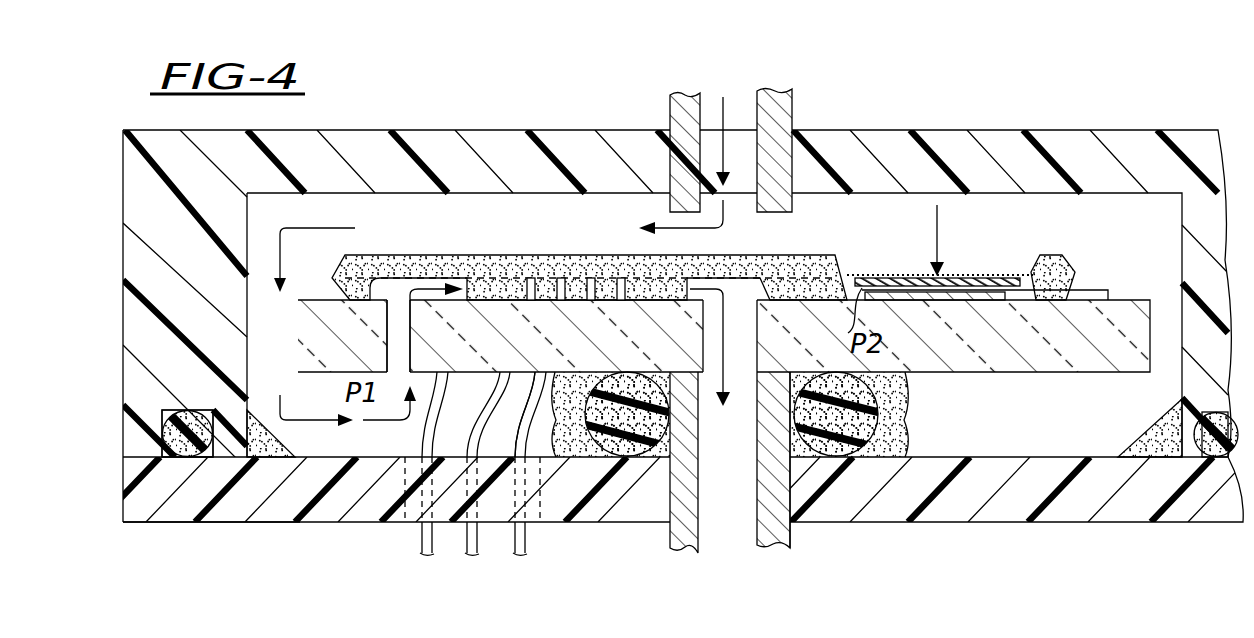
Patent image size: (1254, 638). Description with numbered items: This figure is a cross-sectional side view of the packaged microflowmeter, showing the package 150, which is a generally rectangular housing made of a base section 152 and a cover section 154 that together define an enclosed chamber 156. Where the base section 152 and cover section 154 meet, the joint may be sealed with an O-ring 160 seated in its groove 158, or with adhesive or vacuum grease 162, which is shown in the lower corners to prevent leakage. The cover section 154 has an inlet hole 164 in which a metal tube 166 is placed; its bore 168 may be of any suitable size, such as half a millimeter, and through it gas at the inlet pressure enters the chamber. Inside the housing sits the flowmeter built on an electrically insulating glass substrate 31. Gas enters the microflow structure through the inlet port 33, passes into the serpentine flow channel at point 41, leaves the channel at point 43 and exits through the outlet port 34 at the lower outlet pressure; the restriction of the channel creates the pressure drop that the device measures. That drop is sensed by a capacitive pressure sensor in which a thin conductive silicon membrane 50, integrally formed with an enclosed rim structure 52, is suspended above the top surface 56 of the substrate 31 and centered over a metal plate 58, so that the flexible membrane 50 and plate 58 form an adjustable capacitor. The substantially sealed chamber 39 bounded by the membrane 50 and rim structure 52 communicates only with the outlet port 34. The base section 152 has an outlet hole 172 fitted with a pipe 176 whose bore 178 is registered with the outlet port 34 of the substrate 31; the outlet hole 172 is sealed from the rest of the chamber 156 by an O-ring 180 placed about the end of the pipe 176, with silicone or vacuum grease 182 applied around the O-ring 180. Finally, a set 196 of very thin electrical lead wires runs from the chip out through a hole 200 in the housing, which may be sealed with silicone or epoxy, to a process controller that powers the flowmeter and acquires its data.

The substrate 31 is at (320, 300).
The inlet port 33 is at (435, 372).
The outlet port 34 is at (743, 338).
The sealed chamber 39 is at (1012, 285).
The point 41 is at (490, 278).
The point 43 is at (668, 288).
The membrane 50 is at (883, 277).
The rim structure 52 is at (1068, 262).
The top surface 56 is at (1130, 300).
The metal plate 58 is at (993, 300).
The package 150 is at (296, 537).
The base section 152 is at (363, 513).
The cover section 154 is at (560, 130).
The enclosed chamber 156 is at (1087, 194).
The O-ring seal 158 is at (140, 460).
The O-ring 160 is at (200, 458).
The vacuum grease 162 is at (290, 440).
The second pressure tube 164 is at (782, 142).
The metal tube 166 is at (670, 108).
The bore 168 is at (757, 108).
The outlet hole 172 is at (788, 508).
The pipe 176 is at (692, 528).
The bore 178 is at (757, 545).
The O-ring 180 is at (622, 456).
The vacuum grease 182 is at (907, 410).
The set of electrical lead wires 196 is at (540, 565).
The hole 200 is at (533, 507).